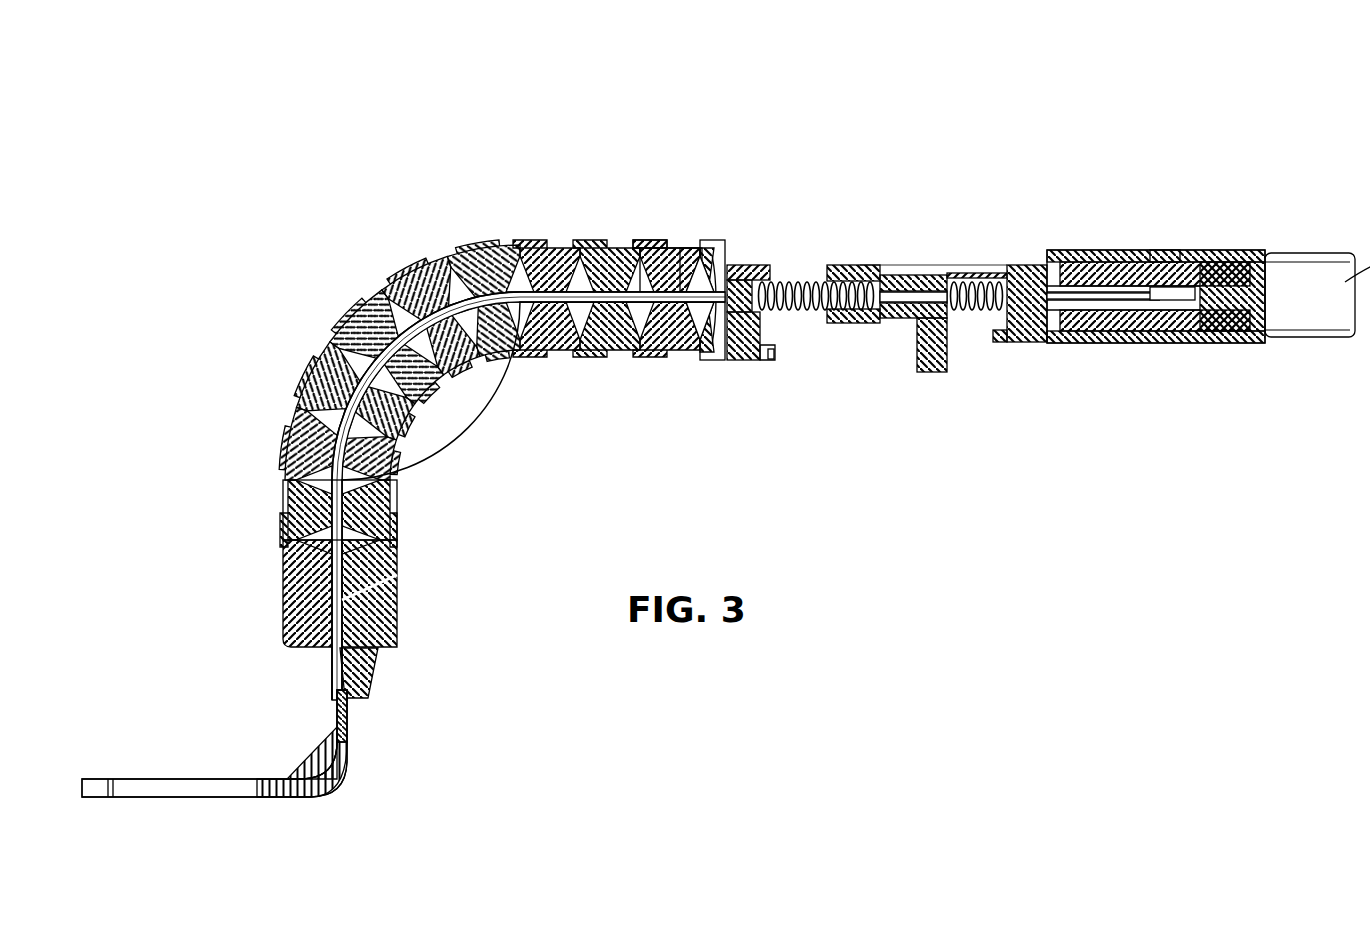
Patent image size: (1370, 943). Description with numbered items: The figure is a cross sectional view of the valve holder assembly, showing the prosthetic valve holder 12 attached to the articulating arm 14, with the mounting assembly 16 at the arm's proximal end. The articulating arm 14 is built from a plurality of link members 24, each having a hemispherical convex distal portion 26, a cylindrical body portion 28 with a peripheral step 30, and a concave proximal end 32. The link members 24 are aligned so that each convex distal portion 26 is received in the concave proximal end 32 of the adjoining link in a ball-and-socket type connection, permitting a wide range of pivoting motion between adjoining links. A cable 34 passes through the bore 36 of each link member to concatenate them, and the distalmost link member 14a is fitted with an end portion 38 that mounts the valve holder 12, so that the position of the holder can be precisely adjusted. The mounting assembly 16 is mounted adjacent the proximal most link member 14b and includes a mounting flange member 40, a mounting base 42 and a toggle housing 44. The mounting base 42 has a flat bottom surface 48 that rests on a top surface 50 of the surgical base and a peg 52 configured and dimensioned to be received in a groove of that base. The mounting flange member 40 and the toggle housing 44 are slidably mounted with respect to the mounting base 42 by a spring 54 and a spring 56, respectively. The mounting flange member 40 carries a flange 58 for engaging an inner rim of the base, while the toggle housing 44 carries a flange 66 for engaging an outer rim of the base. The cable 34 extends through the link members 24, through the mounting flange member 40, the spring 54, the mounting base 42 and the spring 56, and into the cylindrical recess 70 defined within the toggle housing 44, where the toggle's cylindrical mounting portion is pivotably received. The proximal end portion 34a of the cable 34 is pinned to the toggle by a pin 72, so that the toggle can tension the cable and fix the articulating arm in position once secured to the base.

The prosthetic valve holder 12 is at (232, 790).
The articulating arm 14 is at (516, 237).
The distalmost link member 14a is at (397, 483).
The proximal most link member 14b is at (668, 357).
The mounting assembly 16 is at (870, 258).
The link members 24 is at (612, 357).
The hemispherical convex distal portion 26 is at (672, 240).
The cylindrical body portion 28 is at (716, 240).
The peripheral step 30 is at (690, 246).
The concave proximal end 32 is at (722, 258).
The cable 34 is at (400, 556).
The proximal end portion 34a is at (1178, 343).
The bore 36 is at (707, 360).
The end portion 38 is at (397, 612).
The mounting flange member 40 is at (787, 345).
The mounting base 42 is at (955, 262).
The toggle housing 44 is at (1240, 250).
The flat bottom surface 48 is at (905, 262).
The top surface 50 is at (995, 262).
The peg 52 is at (918, 365).
The spring 54 is at (823, 265).
The spring 56 is at (1003, 343).
The flange 58 is at (770, 360).
The flange 66 is at (990, 342).
The cylindrical recess 70 is at (1130, 343).
The pin 72 is at (1165, 250).